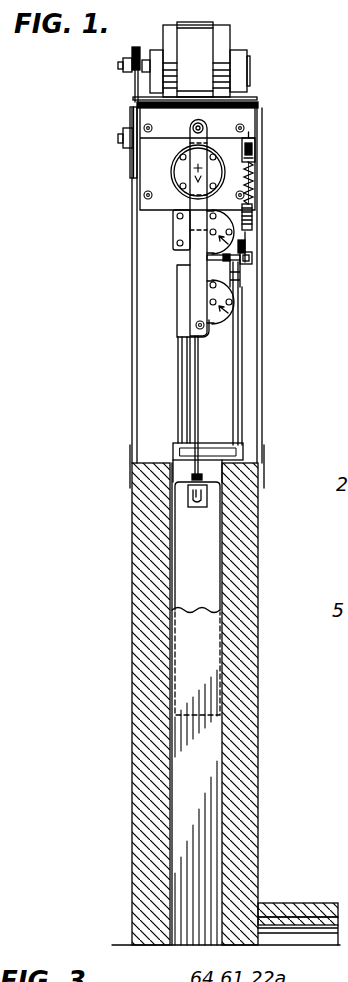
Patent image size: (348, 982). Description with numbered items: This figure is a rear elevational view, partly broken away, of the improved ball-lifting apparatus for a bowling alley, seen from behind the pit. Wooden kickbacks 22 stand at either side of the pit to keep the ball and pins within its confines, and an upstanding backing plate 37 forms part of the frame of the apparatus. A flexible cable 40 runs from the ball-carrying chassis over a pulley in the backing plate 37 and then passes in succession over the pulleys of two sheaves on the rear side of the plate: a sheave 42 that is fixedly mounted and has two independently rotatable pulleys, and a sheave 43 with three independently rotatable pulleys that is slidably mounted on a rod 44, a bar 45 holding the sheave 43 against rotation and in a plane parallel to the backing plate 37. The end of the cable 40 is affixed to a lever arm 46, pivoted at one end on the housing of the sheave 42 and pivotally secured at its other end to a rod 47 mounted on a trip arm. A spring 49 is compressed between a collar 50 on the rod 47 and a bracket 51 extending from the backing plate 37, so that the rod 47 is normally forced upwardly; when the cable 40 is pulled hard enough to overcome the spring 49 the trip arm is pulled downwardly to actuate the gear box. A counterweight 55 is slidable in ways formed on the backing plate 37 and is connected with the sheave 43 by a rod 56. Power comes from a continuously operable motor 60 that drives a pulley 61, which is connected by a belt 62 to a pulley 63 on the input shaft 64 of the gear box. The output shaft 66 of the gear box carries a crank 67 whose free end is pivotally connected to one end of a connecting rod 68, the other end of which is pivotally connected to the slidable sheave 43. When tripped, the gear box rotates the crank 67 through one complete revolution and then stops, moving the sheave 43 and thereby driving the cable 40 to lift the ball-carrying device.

The kickback 22 is at (137, 675).
The backing plate 37 is at (150, 393).
The flexible cable 40 is at (240, 278).
The sheave 42 is at (245, 248).
The sheave 43 is at (222, 309).
The rod 44 is at (186, 410).
The bar 45 is at (238, 375).
The lever arm 46 is at (252, 263).
The rod 47 is at (246, 238).
The spring 49 is at (255, 188).
The collar 50 is at (255, 170).
The bracket 51 is at (252, 214).
The counterweight 55 is at (205, 580).
The rod 56 is at (200, 428).
The motor 60 is at (232, 40).
The pulley 61 is at (133, 73).
The belt 62 is at (135, 91).
The pulley 63 is at (132, 160).
The input shaft 64 is at (118, 142).
The output shaft 66 is at (170, 177).
The crank 67 is at (208, 142).
The connecting rod 68 is at (196, 258).